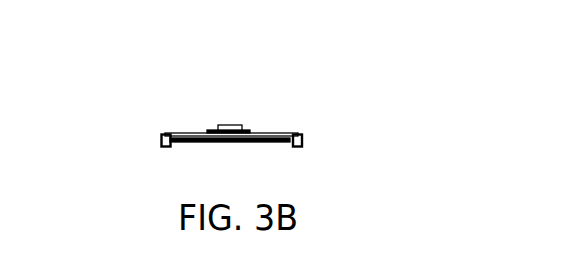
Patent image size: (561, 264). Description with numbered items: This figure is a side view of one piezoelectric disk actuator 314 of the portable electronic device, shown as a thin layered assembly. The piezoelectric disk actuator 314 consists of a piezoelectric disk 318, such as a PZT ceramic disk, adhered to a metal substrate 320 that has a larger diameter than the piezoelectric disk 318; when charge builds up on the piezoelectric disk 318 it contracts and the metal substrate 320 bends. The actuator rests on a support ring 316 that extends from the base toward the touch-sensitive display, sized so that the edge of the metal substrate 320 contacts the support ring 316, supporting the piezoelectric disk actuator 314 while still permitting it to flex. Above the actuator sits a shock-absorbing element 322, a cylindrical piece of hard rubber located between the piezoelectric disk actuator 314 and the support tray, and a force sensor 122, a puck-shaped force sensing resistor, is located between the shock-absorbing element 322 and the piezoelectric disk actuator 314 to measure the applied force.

The piezoelectric disk actuator 314 is at (290, 128).
The support ring 316 is at (160, 140).
The piezoelectric disk 318 is at (266, 150).
The metal substrate 320 is at (299, 134).
The shock-absorbing element 322 is at (218, 126).
The force sensor 122 is at (254, 130).